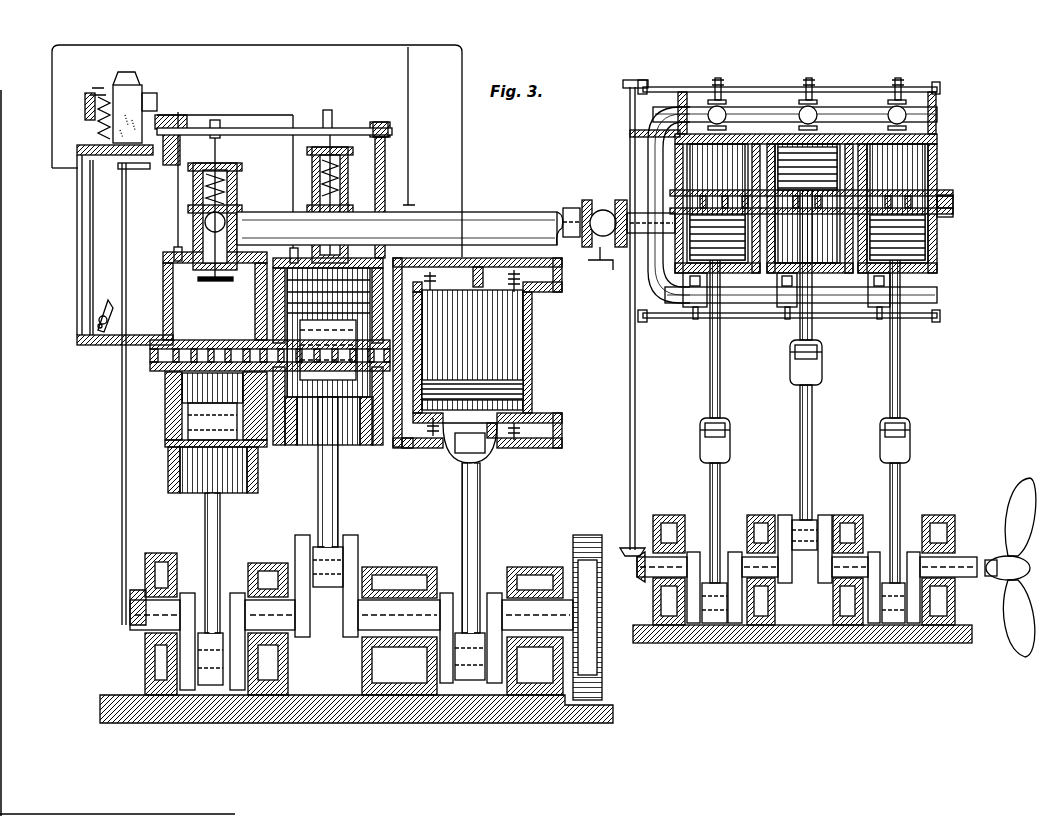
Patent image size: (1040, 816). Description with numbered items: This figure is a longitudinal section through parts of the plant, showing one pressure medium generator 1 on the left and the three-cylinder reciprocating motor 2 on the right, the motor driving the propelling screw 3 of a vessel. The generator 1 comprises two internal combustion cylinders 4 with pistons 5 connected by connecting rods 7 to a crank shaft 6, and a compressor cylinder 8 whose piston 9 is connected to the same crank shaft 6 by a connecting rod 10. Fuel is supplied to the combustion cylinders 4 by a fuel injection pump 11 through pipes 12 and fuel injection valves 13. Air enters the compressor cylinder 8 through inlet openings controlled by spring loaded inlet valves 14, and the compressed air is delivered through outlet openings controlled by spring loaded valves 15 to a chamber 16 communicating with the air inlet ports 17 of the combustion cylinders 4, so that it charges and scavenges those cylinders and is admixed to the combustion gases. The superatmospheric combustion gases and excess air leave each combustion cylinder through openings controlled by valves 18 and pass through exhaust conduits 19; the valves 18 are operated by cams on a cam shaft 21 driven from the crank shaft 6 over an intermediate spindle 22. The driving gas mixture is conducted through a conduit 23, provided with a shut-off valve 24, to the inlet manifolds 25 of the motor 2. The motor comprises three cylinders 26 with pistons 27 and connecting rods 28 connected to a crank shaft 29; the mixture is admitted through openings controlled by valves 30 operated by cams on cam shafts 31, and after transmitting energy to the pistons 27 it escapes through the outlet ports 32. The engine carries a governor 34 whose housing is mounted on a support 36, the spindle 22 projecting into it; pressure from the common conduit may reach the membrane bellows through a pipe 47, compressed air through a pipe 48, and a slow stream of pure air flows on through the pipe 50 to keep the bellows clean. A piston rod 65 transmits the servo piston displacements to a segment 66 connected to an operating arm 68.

The pressure medium generator 1 is at (158, 696).
The three-cylinder reciprocating motor 2 is at (783, 628).
The propelling screw 3 is at (1012, 490).
The internal combustion cylinder 4 is at (165, 403).
The piston 5 is at (172, 460).
The crank shaft 6 is at (402, 610).
The connecting rod 7 is at (221, 516).
The compressor cylinder 8 is at (533, 340).
The compressor piston 9 is at (525, 383).
The connecting rod 10 is at (481, 543).
The fuel injection pump 11 is at (152, 118).
The fuel pipe 12 is at (188, 118).
The fuel injection valve 13 is at (168, 250).
The spring loaded inlet valve 14 is at (523, 297).
The spring loaded outlet valve 15 is at (429, 283).
The chamber 16 is at (405, 440).
The air inlet port 17 is at (230, 364).
The outlet valve 18 is at (200, 278).
The exhaust conduit 19 is at (248, 210).
The cam shaft 21 is at (242, 128).
The intermediate spindle 22 is at (122, 438).
The conduit 23 is at (573, 212).
The shut-off valve 24 is at (588, 200).
The inlet manifold 25 is at (763, 113).
The pneumatic cylinder 26 is at (685, 163).
The piston 27 is at (833, 147).
The connecting rod 28 is at (709, 483).
The crank shaft 29 is at (845, 533).
The valve 30 is at (727, 104).
The cam shaft 31 is at (698, 87).
The outlet port 32 is at (705, 197).
The governor 34 is at (133, 102).
The support 36 is at (77, 186).
The pipe 47 is at (385, 126).
The pipe 48 is at (462, 135).
The pipe 50 is at (407, 76).
The piston rod 65 is at (90, 215).
The segment 66 is at (95, 312).
The operating arm 68 is at (98, 320).